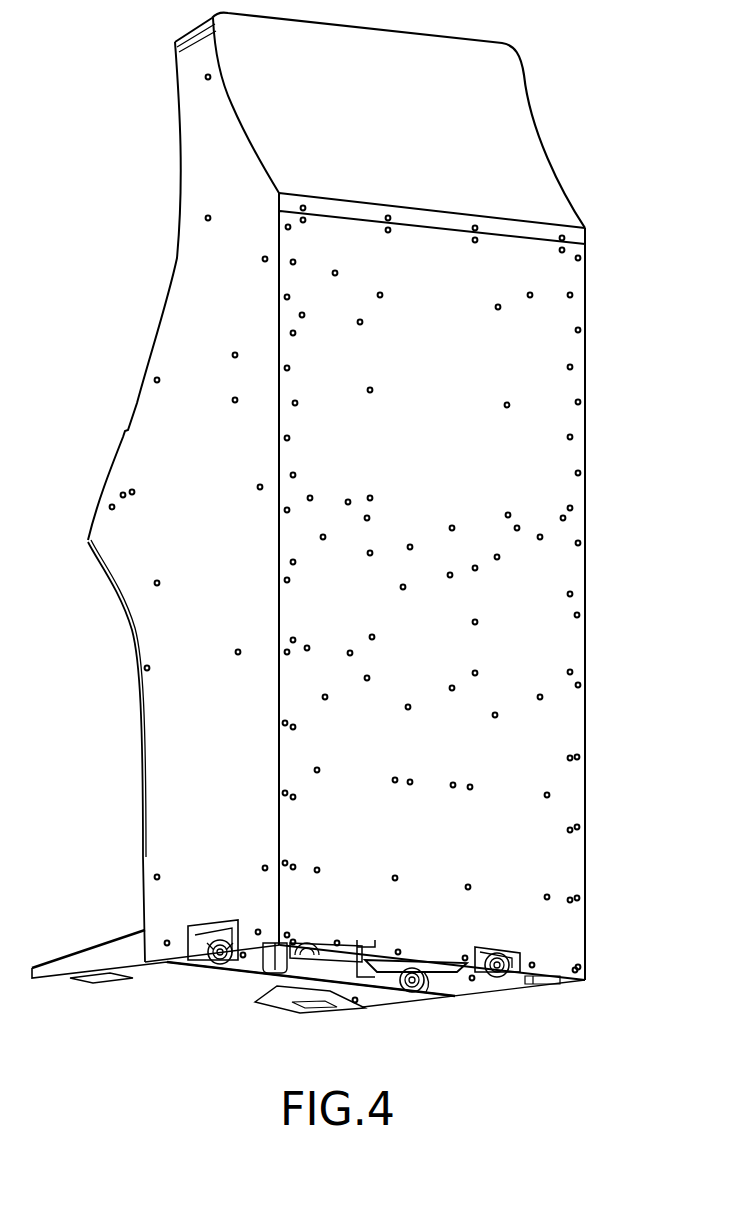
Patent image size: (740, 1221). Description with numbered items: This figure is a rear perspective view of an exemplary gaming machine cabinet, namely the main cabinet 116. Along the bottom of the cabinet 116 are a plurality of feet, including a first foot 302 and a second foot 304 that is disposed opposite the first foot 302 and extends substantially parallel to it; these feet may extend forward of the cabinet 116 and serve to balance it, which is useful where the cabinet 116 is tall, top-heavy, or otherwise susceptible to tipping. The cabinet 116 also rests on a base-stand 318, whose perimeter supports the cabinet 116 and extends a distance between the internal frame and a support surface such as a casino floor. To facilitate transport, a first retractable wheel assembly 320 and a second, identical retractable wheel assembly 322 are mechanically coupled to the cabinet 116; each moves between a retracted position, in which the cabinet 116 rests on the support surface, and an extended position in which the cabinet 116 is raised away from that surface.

The main cabinet 116 is at (585, 293).
The first foot 302 is at (355, 1009).
The second foot 304 is at (110, 982).
The base-stand 318 is at (413, 948).
The first retractable wheel assembly 320 is at (497, 977).
The second retractable wheel assembly 322 is at (218, 966).